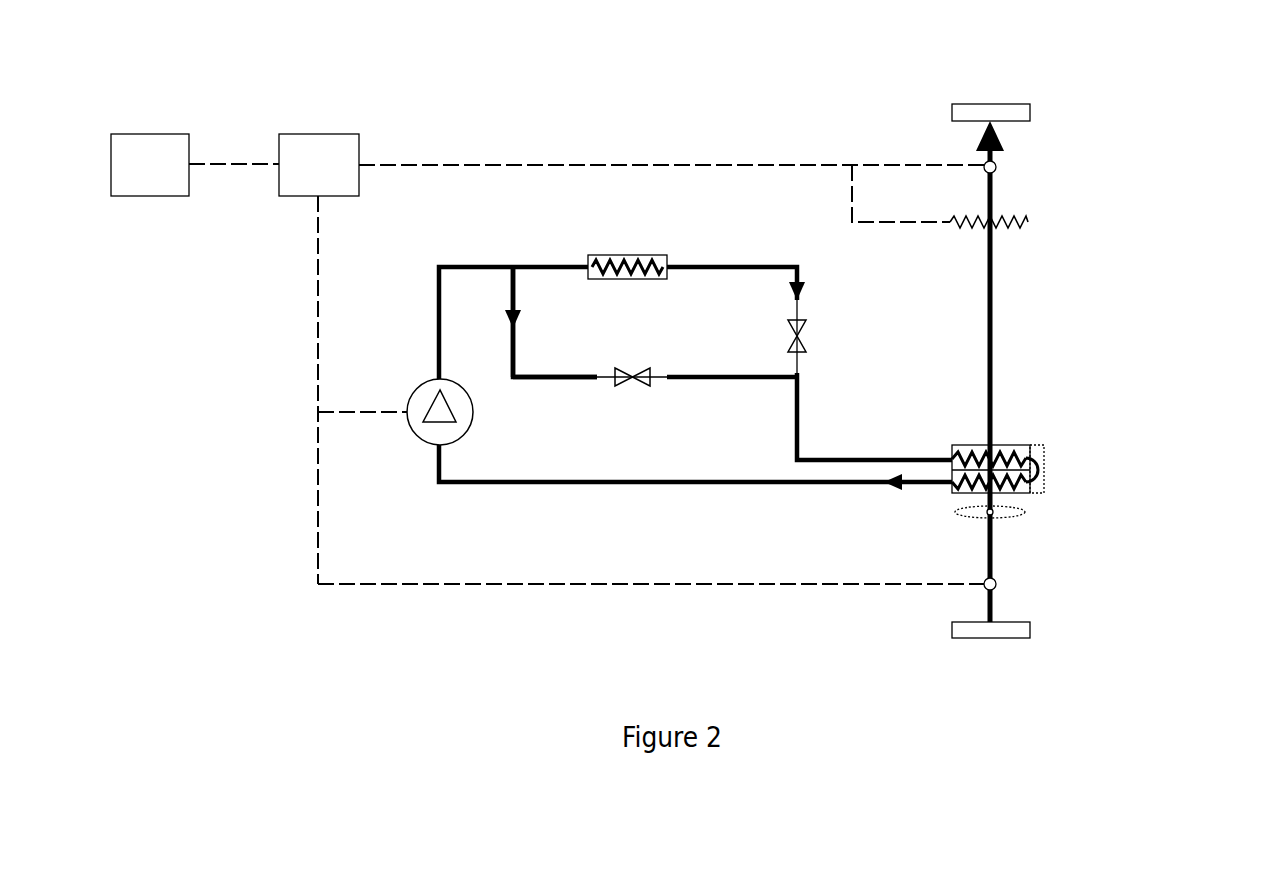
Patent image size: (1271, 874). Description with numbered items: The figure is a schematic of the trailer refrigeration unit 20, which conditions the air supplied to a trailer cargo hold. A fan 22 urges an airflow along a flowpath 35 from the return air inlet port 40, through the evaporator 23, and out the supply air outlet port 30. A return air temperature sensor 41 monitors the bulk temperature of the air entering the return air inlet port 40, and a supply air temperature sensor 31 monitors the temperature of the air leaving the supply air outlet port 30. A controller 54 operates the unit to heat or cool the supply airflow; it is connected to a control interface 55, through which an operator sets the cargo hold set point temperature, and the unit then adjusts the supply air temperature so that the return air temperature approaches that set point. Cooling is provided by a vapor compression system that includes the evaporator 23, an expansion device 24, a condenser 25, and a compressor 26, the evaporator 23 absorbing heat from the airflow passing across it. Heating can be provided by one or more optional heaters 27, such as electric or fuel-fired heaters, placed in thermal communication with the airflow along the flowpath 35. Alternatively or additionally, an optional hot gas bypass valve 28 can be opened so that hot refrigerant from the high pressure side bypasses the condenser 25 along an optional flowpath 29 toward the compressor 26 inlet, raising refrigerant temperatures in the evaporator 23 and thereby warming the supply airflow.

The trailer refrigeration unit 20 is at (1190, 84).
The fan 22 is at (1000, 515).
The evaporator 23 is at (952, 448).
The expansion device 24 is at (795, 336).
The condenser 25 is at (588, 255).
The compressor 26 is at (418, 385).
The heaters 27 is at (1028, 223).
The hot gas bypass valve 28 is at (628, 385).
The flowpath 29 is at (545, 380).
The supply air outlet port 30 is at (1030, 118).
The supply air temperature sensor 31 is at (998, 168).
The flowpath 35 is at (996, 270).
The return air inlet port 40 is at (1030, 630).
The return air temperature sensor 41 is at (998, 587).
The controller 54 is at (320, 134).
The control interface 55 is at (151, 134).